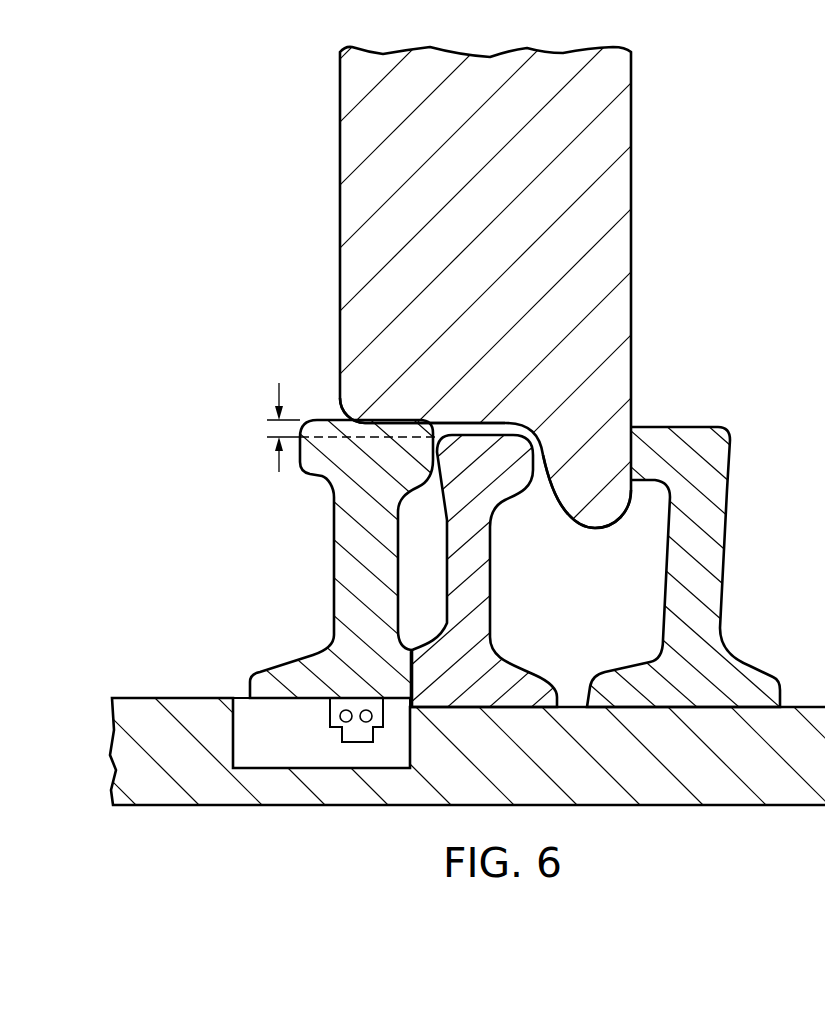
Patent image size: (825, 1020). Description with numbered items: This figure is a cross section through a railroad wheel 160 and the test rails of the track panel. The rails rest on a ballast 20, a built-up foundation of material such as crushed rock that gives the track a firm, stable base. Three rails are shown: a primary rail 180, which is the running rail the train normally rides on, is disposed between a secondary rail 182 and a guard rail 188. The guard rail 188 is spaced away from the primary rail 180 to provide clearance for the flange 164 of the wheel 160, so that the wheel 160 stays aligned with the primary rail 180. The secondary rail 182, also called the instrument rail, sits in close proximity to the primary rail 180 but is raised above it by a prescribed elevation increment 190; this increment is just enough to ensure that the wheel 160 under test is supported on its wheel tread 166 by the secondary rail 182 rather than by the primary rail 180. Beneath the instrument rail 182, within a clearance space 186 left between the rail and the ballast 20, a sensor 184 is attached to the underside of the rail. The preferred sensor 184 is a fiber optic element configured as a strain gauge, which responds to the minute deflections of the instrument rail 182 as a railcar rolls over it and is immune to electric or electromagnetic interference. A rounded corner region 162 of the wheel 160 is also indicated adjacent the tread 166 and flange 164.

The ballast 20 is at (790, 806).
The railroad wheel 160 is at (632, 245).
The fillet corner of guide block 162 is at (343, 400).
The flange 164 is at (598, 530).
The wheel tread 166 is at (465, 424).
The primary rail 180 is at (491, 592).
The secondary rail 182 is at (335, 562).
The sensor 184 is at (330, 718).
The clearance space 186 is at (233, 750).
The guard rail 188 is at (727, 560).
The elevation increment 190 is at (279, 392).